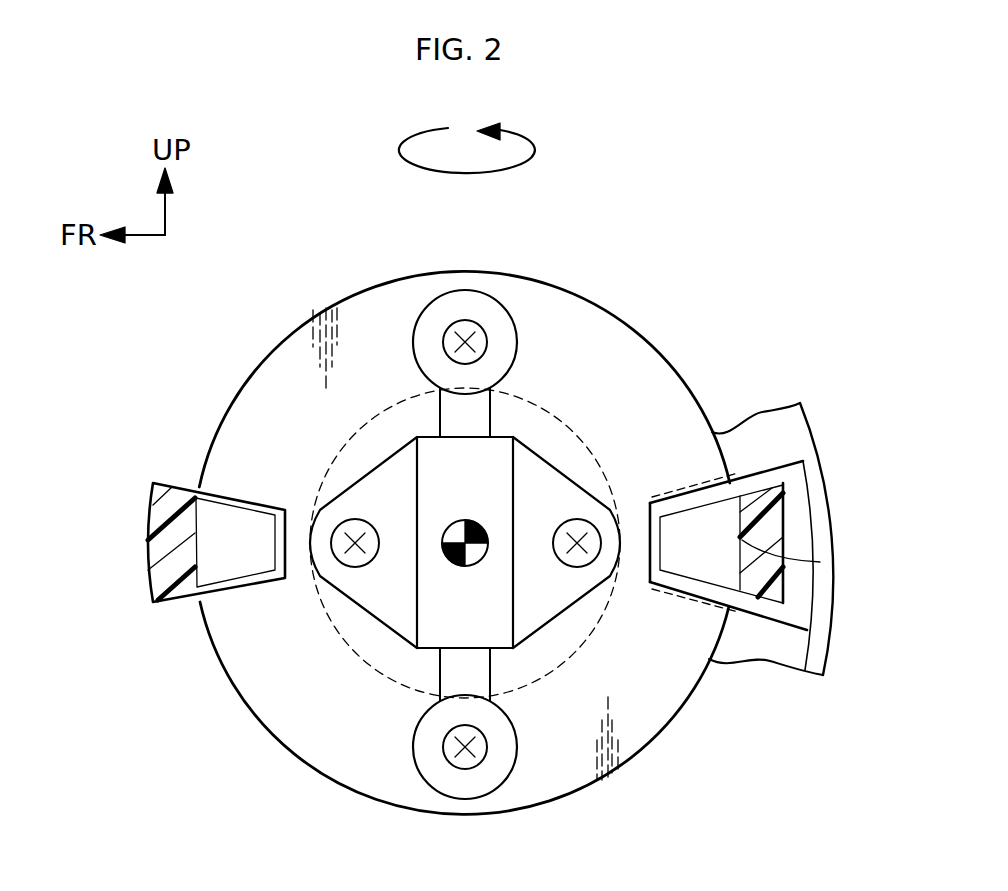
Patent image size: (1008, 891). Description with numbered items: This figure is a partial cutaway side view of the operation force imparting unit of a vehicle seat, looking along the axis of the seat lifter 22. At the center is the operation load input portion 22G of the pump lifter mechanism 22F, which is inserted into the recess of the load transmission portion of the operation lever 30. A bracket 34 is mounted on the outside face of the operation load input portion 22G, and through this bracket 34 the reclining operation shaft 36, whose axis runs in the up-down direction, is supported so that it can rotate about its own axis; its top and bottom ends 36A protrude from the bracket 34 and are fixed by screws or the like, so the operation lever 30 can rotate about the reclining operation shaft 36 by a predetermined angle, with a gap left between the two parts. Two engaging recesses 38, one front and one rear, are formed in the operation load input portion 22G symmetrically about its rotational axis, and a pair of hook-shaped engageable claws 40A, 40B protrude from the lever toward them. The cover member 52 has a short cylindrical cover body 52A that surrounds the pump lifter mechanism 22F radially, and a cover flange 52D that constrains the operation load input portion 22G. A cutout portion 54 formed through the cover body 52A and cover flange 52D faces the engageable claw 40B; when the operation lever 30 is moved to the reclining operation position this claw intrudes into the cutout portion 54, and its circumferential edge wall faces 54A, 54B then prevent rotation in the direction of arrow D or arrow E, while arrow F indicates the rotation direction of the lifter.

The seat lifter 22 is at (487, 536).
The pump lifter mechanism 22F is at (615, 319).
The operation load input portion 22G is at (643, 378).
The operation lever 30 is at (221, 579).
The bracket 34 is at (493, 478).
The reclining operation shaft 36 is at (477, 669).
The top and bottom ends 36A is at (498, 322).
The engaging recesses 38 is at (252, 516).
The engageable claw 40A is at (237, 563).
The engageable claw 40B is at (700, 568).
The cover member 52 is at (805, 496).
The cover body 52A is at (752, 548).
The cover flange 52D is at (778, 443).
The cutout portion 54 is at (751, 573).
The wall face 54A is at (793, 595).
The wall face 54B is at (760, 480).
The rotation direction F is at (533, 150).
The direction of arrow D is at (63, 660).
The direction of arrow E is at (867, 430).